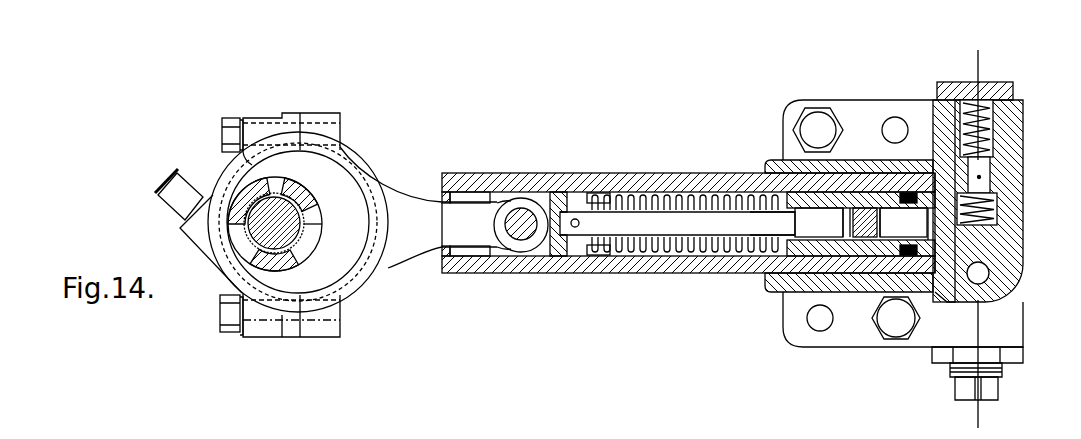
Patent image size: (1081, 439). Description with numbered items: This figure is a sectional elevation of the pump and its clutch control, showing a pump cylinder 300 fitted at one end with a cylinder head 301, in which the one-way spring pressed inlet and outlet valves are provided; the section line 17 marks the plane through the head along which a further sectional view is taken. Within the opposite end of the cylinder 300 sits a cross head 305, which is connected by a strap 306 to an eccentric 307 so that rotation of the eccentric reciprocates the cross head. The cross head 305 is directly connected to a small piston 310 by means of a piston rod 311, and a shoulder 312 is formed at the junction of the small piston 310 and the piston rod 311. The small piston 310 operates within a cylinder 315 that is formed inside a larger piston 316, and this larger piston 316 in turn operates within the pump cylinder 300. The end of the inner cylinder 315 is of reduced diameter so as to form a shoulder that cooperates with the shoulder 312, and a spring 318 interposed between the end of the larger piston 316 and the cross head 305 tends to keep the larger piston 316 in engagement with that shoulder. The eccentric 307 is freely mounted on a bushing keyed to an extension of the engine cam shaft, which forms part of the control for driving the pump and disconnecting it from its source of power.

The section line 17 is at (972, 233).
The pump cylinder 300 is at (647, 182).
The cylinder head 301 is at (1022, 146).
The cross head 305 is at (565, 255).
The strap 306 is at (426, 240).
The eccentric 307 is at (347, 262).
The small piston 310 is at (837, 222).
The piston rod 311 is at (677, 223).
The shoulder 312 is at (772, 223).
The cylinder 315 is at (903, 222).
The larger piston 316 is at (809, 248).
The spring 318 is at (678, 243).